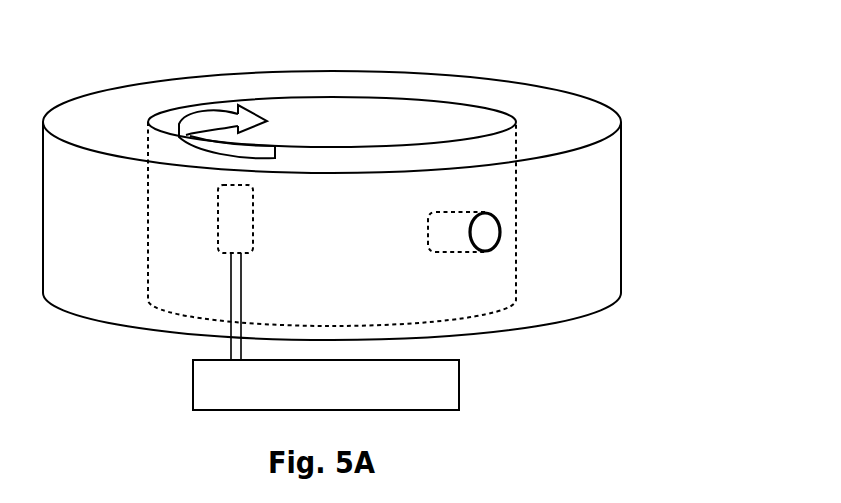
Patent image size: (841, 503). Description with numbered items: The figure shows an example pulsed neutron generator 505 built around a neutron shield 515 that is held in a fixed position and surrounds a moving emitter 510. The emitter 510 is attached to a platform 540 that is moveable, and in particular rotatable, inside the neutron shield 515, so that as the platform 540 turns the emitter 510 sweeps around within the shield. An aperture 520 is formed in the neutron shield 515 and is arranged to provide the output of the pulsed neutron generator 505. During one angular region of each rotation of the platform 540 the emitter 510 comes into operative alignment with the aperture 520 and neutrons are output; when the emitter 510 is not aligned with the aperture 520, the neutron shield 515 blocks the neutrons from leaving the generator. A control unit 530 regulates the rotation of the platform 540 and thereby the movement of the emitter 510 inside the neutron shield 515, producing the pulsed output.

The pulsed neutron generator 505 is at (652, 84).
The emitter 510 is at (235, 217).
The neutron shield 515 is at (391, 73).
The aperture 520 is at (492, 229).
The control unit 530 is at (459, 377).
The platform 540 is at (232, 288).